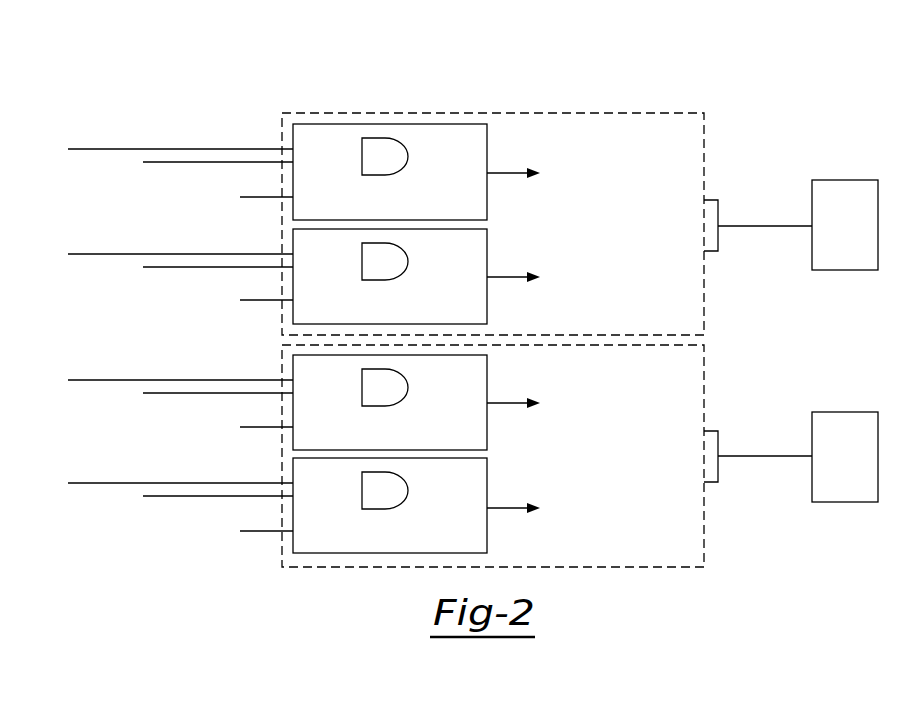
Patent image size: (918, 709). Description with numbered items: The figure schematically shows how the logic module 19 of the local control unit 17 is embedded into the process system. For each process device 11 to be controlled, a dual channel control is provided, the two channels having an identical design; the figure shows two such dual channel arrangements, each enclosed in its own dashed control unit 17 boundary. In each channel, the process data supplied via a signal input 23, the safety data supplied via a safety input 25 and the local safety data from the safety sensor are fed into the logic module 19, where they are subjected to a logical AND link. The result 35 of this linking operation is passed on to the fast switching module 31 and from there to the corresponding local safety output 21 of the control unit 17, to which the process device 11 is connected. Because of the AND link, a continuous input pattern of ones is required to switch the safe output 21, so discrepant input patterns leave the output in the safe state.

The process device 11 is at (858, 238).
The control unit 17 is at (615, 80).
The logic module 19 is at (388, 124).
The control output 21 is at (715, 212).
The signal input 23 is at (229, 192).
The safety input 25 is at (57, 144).
The fast switching module 31 is at (549, 341).
The result of the logical linking operation 35 is at (508, 172).